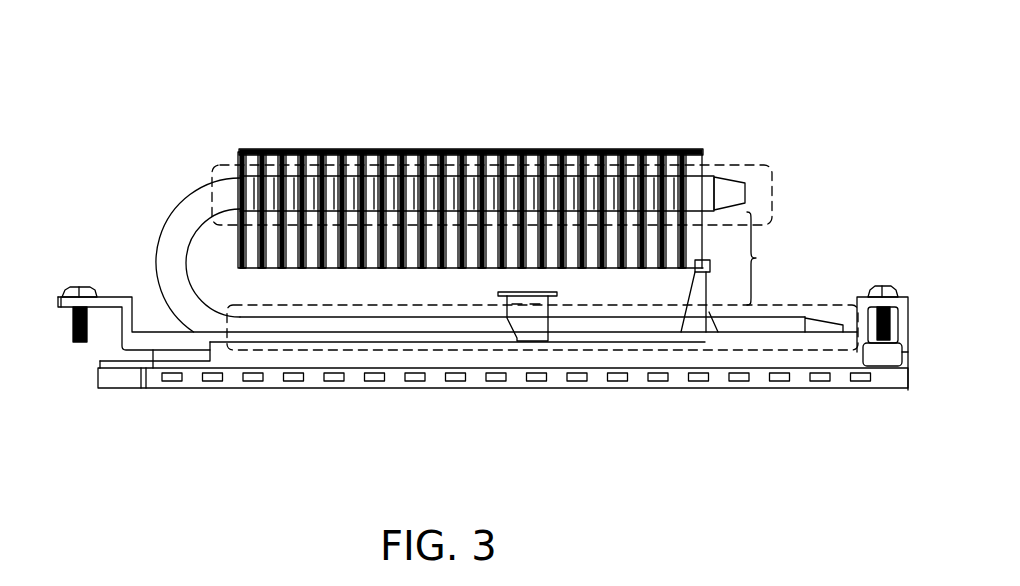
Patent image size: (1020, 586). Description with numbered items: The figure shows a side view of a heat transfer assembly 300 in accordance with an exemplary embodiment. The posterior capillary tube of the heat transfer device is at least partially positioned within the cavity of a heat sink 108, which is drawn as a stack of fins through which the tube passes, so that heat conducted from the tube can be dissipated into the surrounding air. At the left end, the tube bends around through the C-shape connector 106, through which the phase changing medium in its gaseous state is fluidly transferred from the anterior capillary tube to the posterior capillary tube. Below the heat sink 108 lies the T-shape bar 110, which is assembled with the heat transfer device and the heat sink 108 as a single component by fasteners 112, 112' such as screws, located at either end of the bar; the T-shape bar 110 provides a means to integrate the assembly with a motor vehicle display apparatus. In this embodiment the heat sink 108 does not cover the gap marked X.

The heat transfer assembly 300 is at (109, 50).
The C-shape connector 106 is at (168, 222).
The heat sink 108 is at (498, 150).
The T-shape bar 110 is at (131, 340).
The fastener 112 is at (58, 284).
The fastener 112' is at (870, 311).